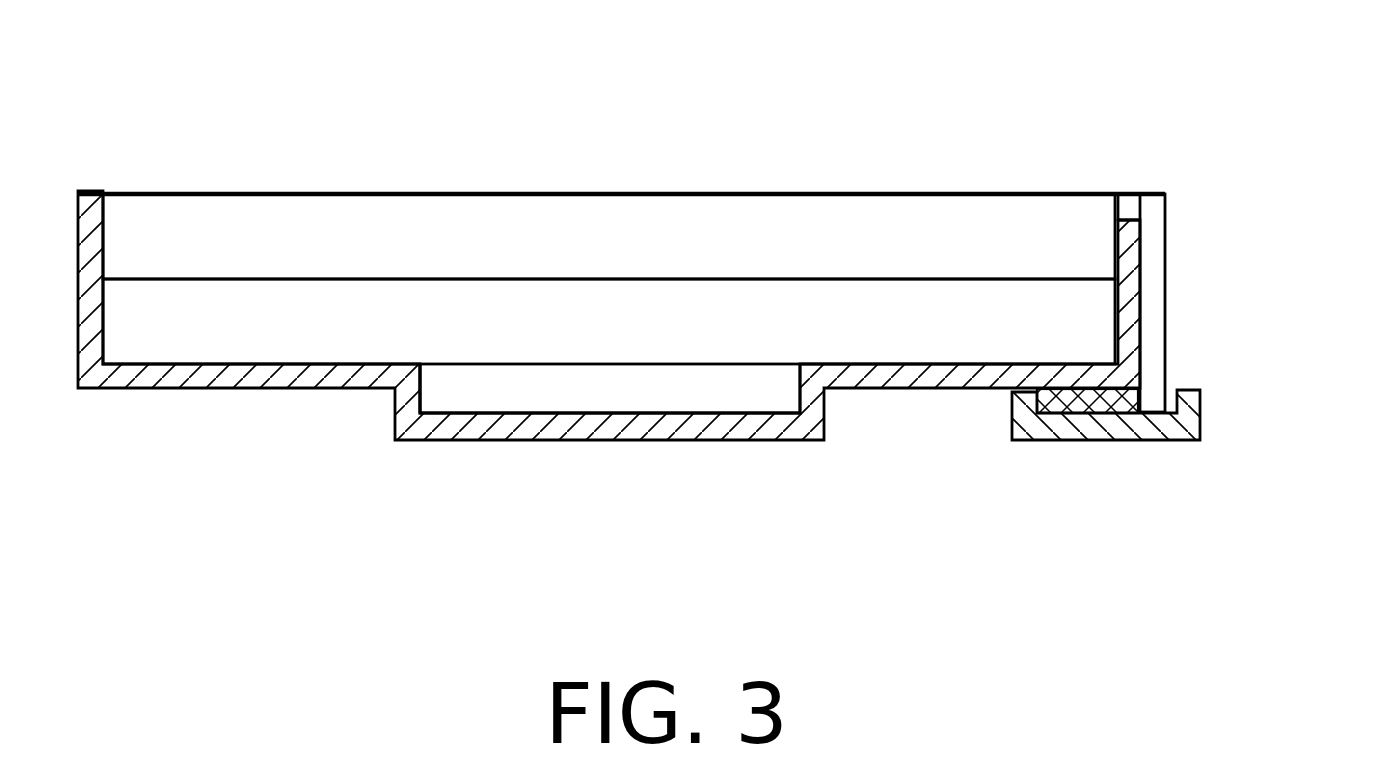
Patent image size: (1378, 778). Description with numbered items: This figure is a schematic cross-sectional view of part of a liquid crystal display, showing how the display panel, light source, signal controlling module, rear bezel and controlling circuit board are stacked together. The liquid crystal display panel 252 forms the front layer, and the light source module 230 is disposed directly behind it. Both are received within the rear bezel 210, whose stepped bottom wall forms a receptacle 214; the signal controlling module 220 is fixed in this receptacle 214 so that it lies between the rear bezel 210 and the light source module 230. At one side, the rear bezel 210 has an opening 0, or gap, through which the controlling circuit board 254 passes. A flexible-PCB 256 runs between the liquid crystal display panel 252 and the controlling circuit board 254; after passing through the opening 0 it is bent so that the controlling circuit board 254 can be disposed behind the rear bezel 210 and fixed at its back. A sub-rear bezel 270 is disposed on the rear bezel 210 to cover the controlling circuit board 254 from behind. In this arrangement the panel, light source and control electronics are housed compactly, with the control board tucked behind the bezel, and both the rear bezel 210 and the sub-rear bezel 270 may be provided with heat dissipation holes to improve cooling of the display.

The rear bezel 210 is at (240, 388).
The receptacle 214 is at (428, 387).
The signal controlling module 220 is at (657, 390).
The light source module 230 is at (737, 325).
The liquid crystal display panel 252 is at (868, 228).
The controlling circuit board 254 is at (1105, 413).
The flexible-PCB 256 is at (1165, 298).
The sub-rear bezel 270 is at (1025, 412).
The opening 0 is at (1128, 218).